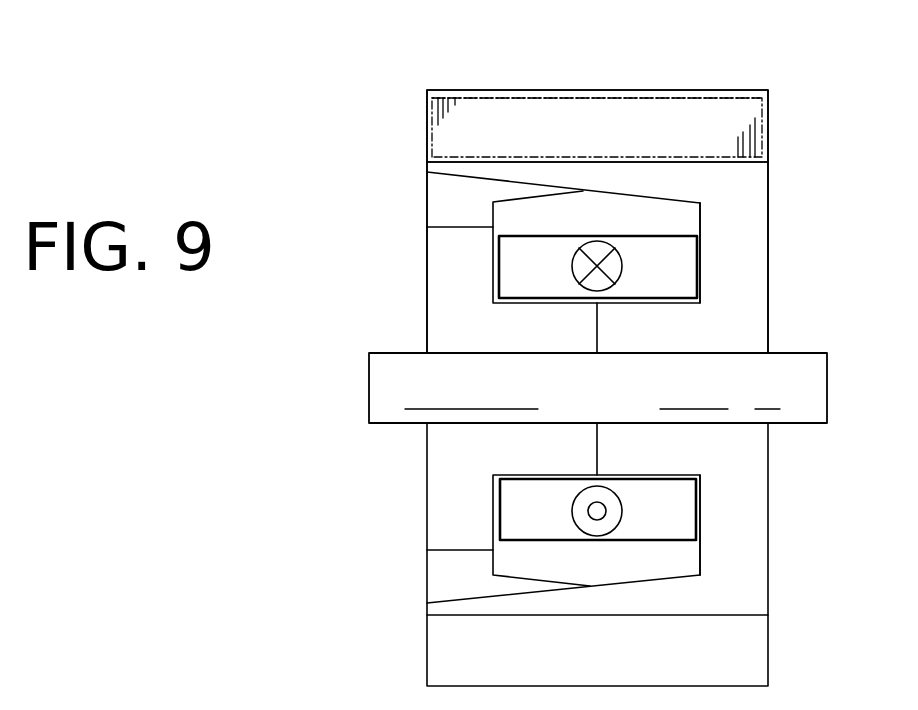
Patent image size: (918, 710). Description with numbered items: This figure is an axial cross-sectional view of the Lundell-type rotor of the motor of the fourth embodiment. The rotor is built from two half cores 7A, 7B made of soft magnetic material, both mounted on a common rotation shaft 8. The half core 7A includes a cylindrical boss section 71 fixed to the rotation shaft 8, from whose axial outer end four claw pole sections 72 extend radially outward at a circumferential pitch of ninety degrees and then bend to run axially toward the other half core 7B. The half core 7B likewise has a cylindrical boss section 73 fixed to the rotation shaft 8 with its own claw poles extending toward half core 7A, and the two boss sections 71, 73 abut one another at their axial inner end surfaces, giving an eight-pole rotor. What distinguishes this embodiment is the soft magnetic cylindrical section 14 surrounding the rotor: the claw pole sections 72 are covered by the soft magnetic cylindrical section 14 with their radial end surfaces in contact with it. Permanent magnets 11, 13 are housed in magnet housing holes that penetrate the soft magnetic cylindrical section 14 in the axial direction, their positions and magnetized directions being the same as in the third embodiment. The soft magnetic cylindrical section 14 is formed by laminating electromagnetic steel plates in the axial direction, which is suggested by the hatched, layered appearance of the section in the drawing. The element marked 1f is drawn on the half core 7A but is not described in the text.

The soft magnetic cylindrical section 14 is at (493, 88).
The claw pole sections 72 is at (587, 107).
The permanent magnet 11 is at (693, 108).
The permanent magnet 13 is at (597, 88).
The half core 7A is at (403, 170).
The half core 7B is at (788, 170).
The bearing 1f is at (677, 260).
The boss section 71 is at (733, 323).
The boss section 73 is at (462, 322).
The rotation shaft 8 is at (375, 378).